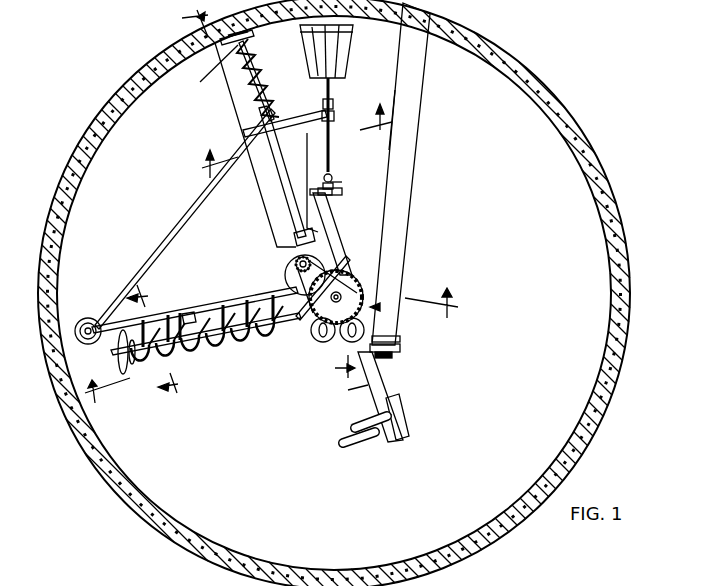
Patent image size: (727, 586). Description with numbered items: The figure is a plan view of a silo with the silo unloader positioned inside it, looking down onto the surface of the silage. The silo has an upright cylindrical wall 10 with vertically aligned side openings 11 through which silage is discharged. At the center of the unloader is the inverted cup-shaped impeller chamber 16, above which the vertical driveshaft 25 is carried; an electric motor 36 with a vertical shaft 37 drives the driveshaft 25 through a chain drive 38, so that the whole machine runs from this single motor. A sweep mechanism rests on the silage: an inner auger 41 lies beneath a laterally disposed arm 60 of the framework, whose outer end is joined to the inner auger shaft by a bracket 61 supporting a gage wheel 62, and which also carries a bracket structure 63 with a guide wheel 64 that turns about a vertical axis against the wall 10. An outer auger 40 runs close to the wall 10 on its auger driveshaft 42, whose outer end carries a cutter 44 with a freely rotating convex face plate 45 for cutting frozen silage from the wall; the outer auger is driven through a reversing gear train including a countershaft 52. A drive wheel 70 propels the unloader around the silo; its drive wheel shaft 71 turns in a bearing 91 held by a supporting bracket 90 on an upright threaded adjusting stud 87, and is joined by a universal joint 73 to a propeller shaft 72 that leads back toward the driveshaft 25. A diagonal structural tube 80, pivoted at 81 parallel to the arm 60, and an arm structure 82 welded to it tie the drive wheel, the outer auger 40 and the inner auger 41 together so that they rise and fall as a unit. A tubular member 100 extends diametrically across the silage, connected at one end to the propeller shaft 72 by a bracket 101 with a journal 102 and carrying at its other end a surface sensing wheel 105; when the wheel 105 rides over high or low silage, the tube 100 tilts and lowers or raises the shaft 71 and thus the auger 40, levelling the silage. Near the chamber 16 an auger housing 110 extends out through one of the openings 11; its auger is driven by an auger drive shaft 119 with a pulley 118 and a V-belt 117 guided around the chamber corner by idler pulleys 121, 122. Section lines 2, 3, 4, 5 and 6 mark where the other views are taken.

The cylindrical wall 10 is at (615, 204).
The side openings 11 is at (432, 20).
The auger housing 110 is at (414, 124).
The drive wheel 70 is at (350, 47).
The drive wheel shaft 71 is at (331, 158).
The supporting bracket 90 is at (333, 104).
The bearing 91 is at (334, 117).
The universal joint 73 is at (334, 179).
The threaded adjusting stud 87 is at (318, 117).
The propeller shaft 72 is at (346, 228).
The bracket 101 is at (342, 192).
The journal 102 is at (340, 182).
The auger driveshaft 42 is at (272, 143).
The structural tube 80 is at (212, 238).
The arm structure 82 is at (277, 116).
The outer auger 40 is at (256, 90).
The cutter 44 is at (254, 36).
The convex face plate 45 is at (207, 70).
The chain drive 38 is at (360, 278).
The driveshaft 25 is at (342, 296).
The electric motor 36 is at (286, 277).
The vertical shaft 37 is at (297, 262).
The countershaft 52 is at (351, 262).
The idler pulley 121 is at (323, 343).
The idler pulley 122 is at (330, 343).
The impeller chamber 16 is at (372, 307).
The auger drive shaft 119 is at (400, 347).
The V-belt 117 is at (396, 351).
The pulley 118 is at (400, 357).
The tubular member 100 is at (380, 397).
The surface sensing wheel 105 is at (340, 441).
The bracket structure 63 is at (115, 318).
The guide wheel 64 is at (88, 318).
The arm 60 is at (196, 338).
The inner auger 41 is at (232, 338).
The gage wheel 62 is at (126, 364).
The bracket 61 is at (128, 353).
The pivot 81 is at (190, 312).
The section line 2- 2 is at (271, 356).
The section line 3- 3 is at (267, 205).
The section line 4- 4 is at (336, 367).
The section line 5- 5 is at (297, 149).
The section line 6- 6 is at (160, 339).